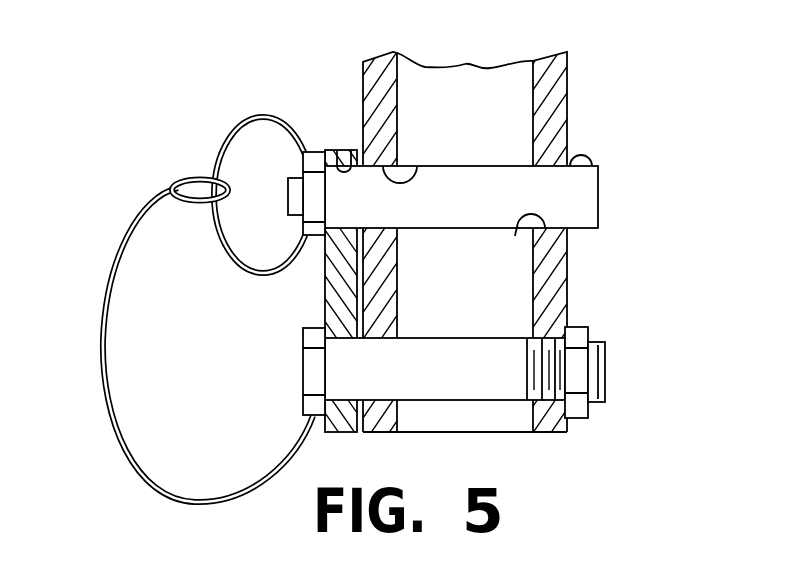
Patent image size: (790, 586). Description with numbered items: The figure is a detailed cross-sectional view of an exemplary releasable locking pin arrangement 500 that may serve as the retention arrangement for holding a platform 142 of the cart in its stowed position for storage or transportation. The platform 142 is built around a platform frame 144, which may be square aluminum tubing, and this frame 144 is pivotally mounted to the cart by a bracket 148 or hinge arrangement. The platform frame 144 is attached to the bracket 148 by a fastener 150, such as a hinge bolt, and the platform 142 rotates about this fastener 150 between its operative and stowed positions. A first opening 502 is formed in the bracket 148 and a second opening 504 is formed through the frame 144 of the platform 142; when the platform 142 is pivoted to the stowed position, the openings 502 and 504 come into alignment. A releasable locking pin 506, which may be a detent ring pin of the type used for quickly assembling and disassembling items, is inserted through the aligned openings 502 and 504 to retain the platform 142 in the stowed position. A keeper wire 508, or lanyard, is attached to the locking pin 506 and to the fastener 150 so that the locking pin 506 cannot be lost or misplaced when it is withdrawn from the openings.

The platform 142 is at (602, 81).
The platform frame 144 is at (567, 262).
The bracket 148 is at (326, 288).
The fastener 150 is at (302, 378).
The releasable locking pin arrangement 500 is at (410, 266).
The first opening 502 is at (342, 152).
The second opening 504 is at (424, 162).
The releasable locking pin 506 is at (602, 196).
The keeper wire 508 is at (113, 268).